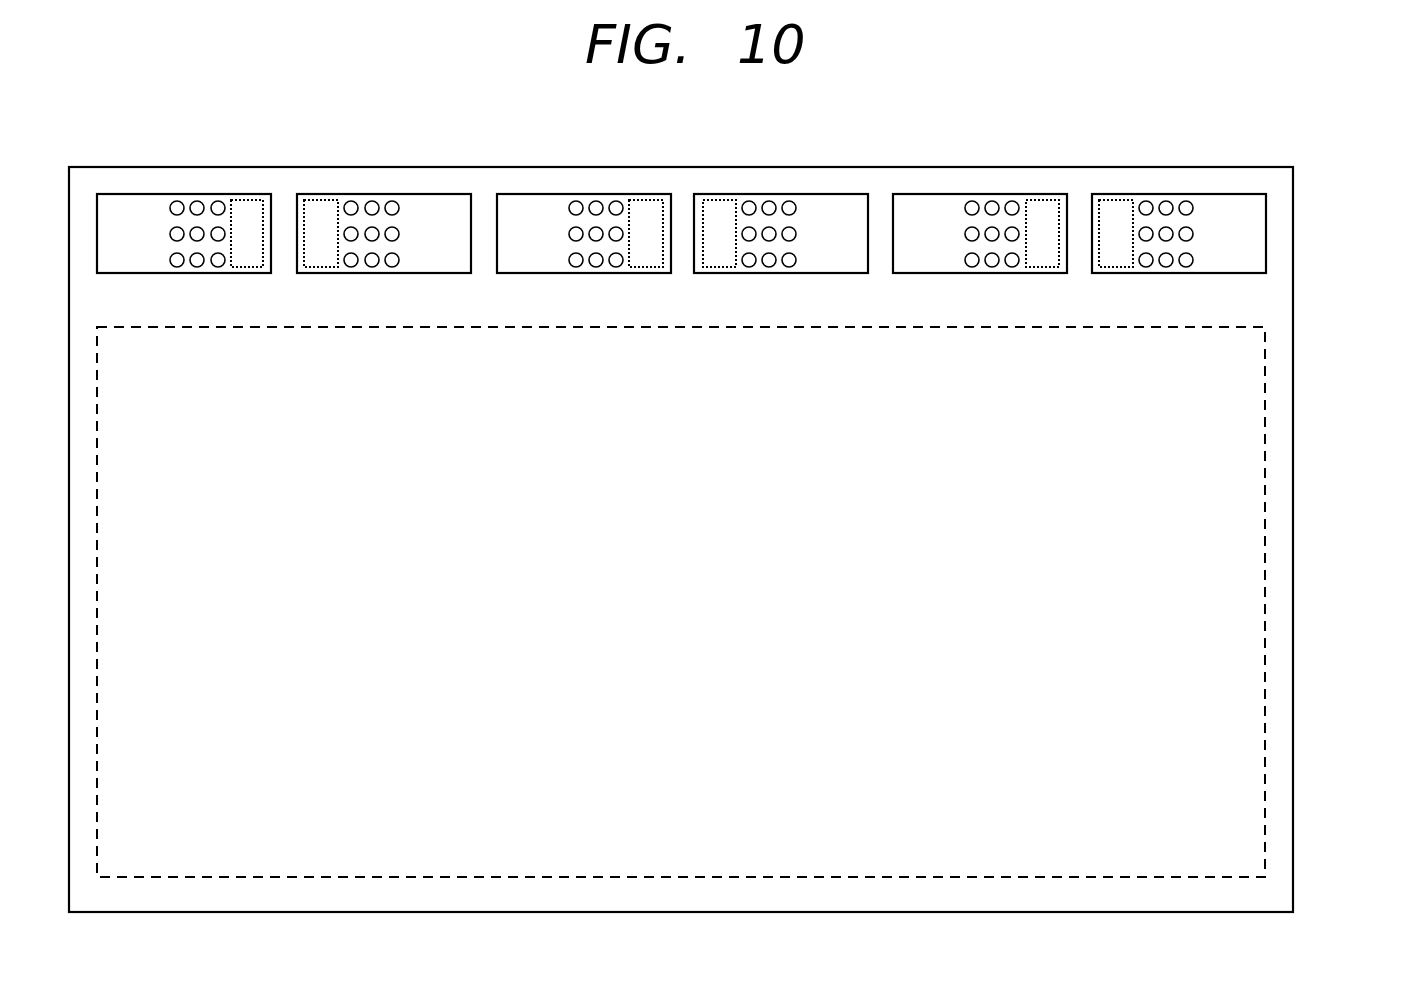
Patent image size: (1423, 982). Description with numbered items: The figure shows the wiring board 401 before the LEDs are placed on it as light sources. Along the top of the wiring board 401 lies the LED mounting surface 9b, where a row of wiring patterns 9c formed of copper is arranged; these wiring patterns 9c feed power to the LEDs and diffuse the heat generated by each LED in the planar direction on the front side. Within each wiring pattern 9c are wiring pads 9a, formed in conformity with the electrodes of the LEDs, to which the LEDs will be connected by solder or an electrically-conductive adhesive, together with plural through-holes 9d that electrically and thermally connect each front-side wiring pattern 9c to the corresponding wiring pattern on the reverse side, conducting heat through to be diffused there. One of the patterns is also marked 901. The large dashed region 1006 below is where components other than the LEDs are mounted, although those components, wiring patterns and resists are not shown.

The wiring board 401 is at (1226, 167).
The region 1006 is at (1233, 512).
The connector 901 is at (384, 233).
The wiring pads 9a is at (1040, 212).
The LED mounting surface 9b is at (877, 185).
The wiring patterns 9c is at (913, 267).
The through-holes 9d is at (1020, 277).